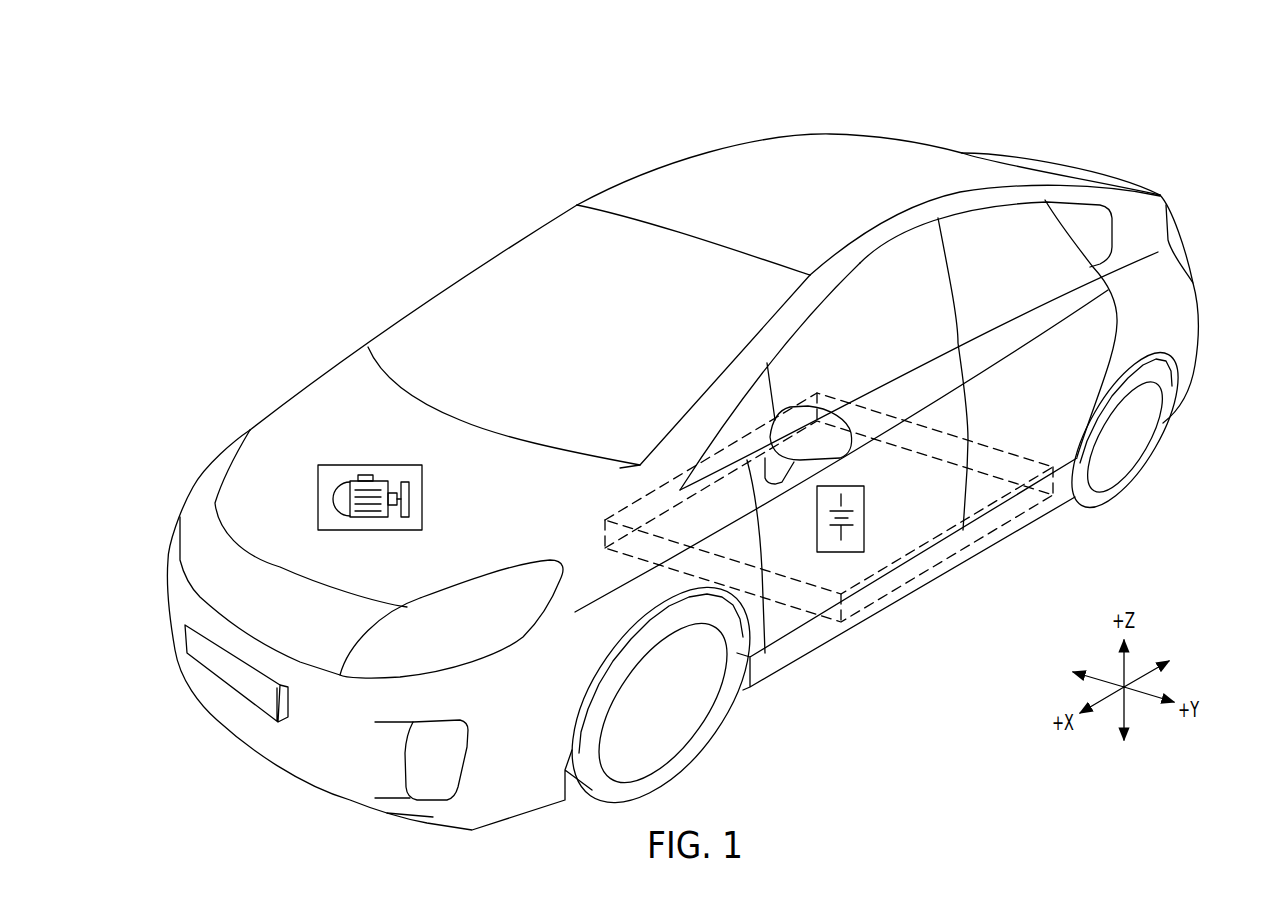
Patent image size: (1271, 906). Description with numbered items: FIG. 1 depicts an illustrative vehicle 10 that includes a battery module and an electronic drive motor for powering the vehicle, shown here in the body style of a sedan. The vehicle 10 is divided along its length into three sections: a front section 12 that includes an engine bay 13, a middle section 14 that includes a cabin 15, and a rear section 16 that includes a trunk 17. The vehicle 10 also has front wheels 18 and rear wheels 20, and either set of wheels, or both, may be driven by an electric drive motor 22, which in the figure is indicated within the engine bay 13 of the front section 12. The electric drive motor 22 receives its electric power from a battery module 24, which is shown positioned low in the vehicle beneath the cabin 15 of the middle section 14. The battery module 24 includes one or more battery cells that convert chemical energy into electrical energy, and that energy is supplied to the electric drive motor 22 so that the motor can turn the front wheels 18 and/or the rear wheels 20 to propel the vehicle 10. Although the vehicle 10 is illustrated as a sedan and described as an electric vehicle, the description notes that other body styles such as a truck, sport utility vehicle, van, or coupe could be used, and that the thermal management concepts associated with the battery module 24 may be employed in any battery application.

The vehicle 10 is at (1074, 149).
The front section 12 is at (238, 392).
The engine bay 13 is at (285, 517).
The middle section 14 is at (597, 170).
The cabin 15 is at (883, 339).
The rear section 16 is at (1192, 234).
The trunk 17 is at (1141, 185).
The front wheels 18 is at (717, 733).
The rear wheels 20 is at (1152, 455).
The electric drive motor 22 is at (422, 497).
The battery module 24 is at (865, 500).